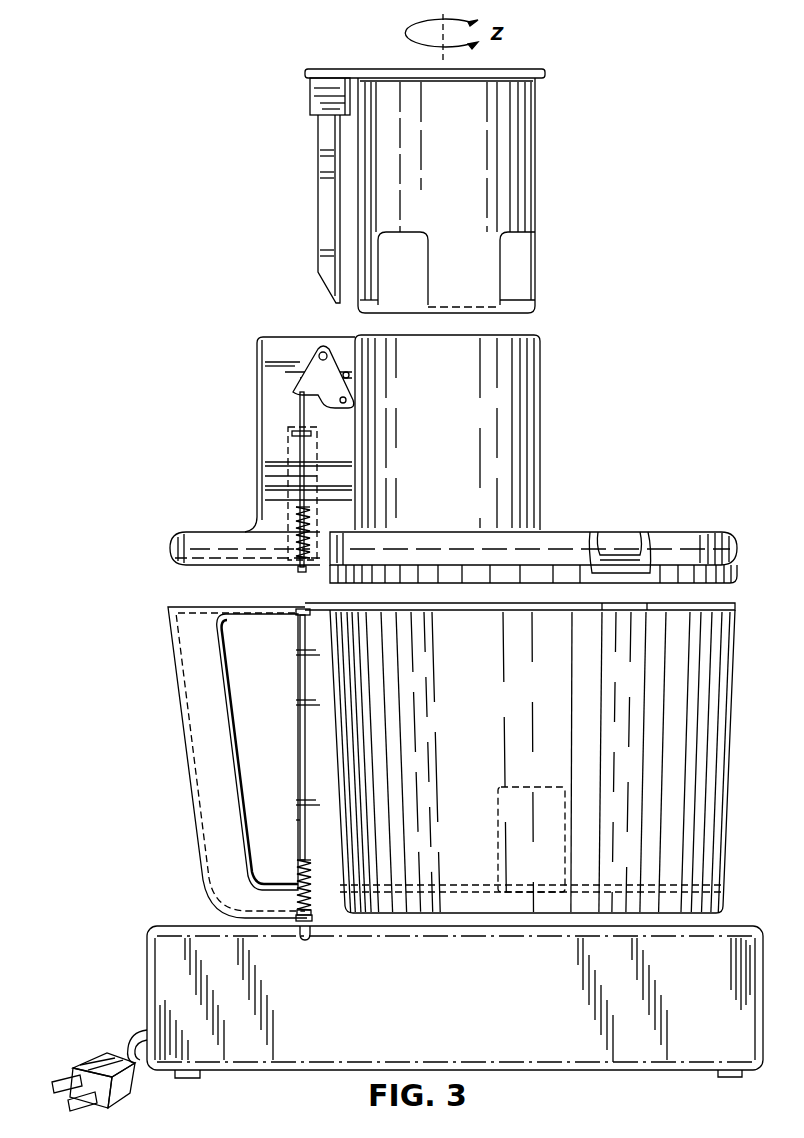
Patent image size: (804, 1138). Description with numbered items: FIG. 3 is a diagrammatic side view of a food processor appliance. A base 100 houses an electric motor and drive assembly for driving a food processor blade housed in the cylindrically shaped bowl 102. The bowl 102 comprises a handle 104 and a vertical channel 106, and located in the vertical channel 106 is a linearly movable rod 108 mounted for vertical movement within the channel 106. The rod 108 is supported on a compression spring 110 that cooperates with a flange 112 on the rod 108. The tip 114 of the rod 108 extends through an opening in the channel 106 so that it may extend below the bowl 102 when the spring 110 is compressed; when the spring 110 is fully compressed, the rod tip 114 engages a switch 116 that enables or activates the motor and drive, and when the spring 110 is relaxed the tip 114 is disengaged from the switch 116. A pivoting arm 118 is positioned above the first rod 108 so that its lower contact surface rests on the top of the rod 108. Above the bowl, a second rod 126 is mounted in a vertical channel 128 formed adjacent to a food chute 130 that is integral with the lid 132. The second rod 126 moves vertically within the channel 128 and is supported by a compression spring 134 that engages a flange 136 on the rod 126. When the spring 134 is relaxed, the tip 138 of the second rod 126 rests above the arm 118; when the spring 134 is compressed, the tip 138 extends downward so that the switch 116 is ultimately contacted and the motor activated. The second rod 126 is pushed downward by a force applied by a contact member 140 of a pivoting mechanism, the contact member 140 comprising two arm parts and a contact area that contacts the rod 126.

The base 100 is at (341, 1057).
The bowl 102 is at (728, 823).
The handle 104 is at (188, 757).
The vertical channel 106 is at (300, 690).
The rod 108 is at (300, 825).
The compression spring 110 is at (302, 900).
The flange 112 is at (303, 860).
The tip 114 is at (306, 912).
The switch 116 is at (306, 942).
The pivoting arm 118 is at (297, 612).
The second rod 126 is at (300, 448).
The vertical channel 128 is at (292, 478).
The food chute 130 is at (505, 410).
The lid 132 is at (548, 540).
The compression spring 134 is at (296, 520).
The flange 136 is at (308, 503).
The tip 138 is at (305, 572).
The contact member 140 is at (293, 392).